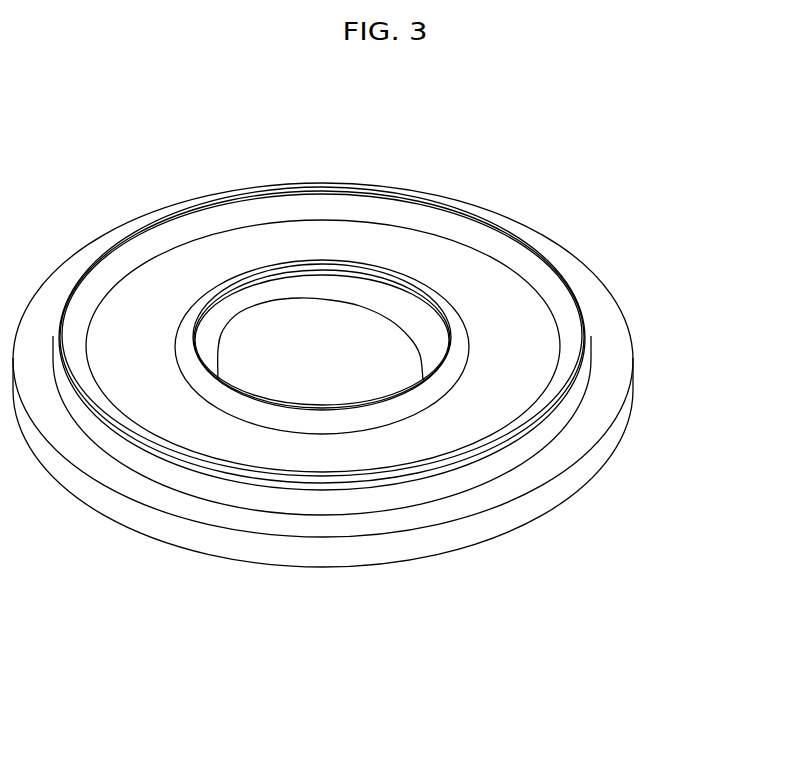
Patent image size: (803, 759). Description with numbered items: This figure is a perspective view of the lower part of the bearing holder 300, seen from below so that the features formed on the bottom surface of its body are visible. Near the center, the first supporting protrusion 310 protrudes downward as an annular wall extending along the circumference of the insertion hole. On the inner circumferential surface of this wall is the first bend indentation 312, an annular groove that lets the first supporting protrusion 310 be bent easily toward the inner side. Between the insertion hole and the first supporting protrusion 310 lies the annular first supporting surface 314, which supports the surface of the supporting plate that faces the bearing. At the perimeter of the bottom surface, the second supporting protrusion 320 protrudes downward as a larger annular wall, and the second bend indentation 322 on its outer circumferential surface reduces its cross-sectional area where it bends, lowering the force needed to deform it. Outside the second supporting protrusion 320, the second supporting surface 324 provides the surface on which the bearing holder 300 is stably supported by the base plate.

The bearing holder 300 is at (628, 153).
The first supporting protrusion 310 is at (460, 330).
The first bend indentation 312 is at (322, 273).
The first supporting surface 314 is at (255, 308).
The second supporting protrusion 320 is at (583, 312).
The second bend indentation 322 is at (408, 482).
The second supporting surface 324 is at (597, 407).